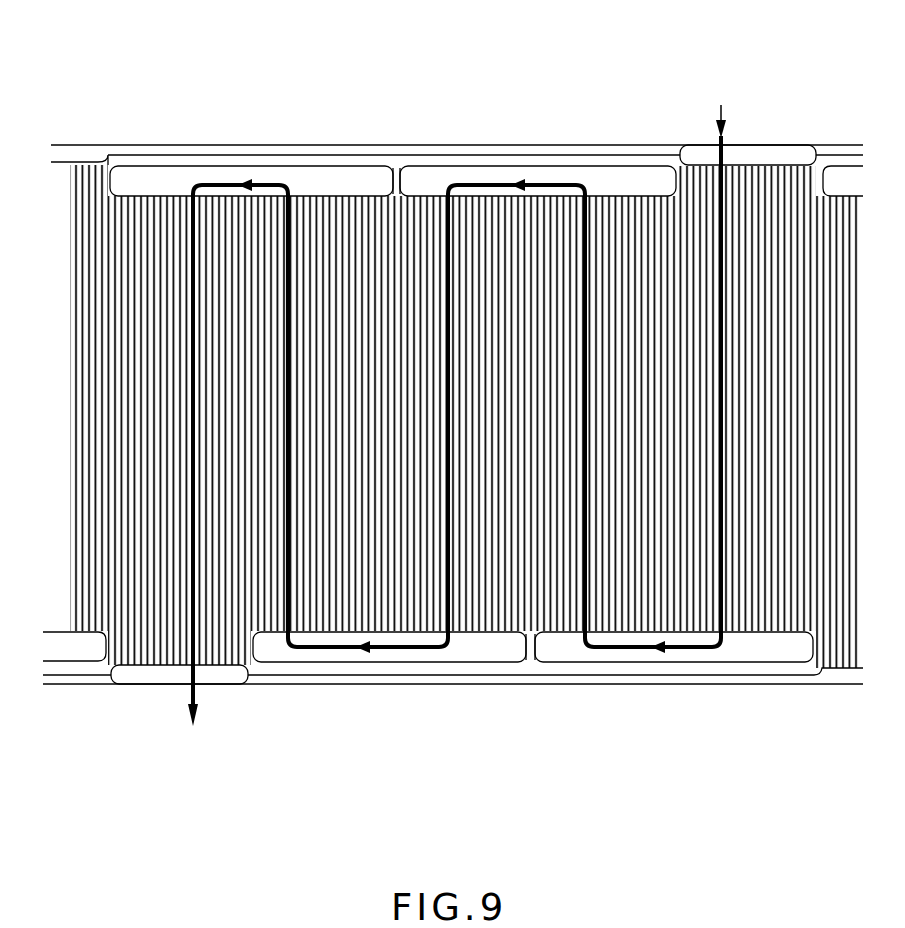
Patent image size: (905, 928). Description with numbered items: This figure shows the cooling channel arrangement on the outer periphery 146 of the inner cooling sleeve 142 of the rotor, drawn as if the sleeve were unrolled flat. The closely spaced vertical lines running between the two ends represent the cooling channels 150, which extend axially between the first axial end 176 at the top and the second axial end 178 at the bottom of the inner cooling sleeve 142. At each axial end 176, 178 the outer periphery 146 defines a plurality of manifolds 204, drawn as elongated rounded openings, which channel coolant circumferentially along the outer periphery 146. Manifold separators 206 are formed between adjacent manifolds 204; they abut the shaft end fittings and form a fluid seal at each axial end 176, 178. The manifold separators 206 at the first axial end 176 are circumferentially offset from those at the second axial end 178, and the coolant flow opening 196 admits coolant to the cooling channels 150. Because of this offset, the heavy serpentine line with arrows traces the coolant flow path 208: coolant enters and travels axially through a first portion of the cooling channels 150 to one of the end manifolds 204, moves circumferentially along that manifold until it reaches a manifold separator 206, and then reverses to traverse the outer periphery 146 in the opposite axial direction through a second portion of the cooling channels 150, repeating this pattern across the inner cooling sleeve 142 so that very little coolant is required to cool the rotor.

The inner cooling sleeve 142 is at (155, 106).
The outer periphery 146 is at (58, 577).
The cooling channels 150 is at (785, 212).
The first axial end 176 is at (620, 135).
The second axial end 178 is at (808, 678).
The coolant flow opening 196 is at (133, 668).
The manifolds 204 is at (305, 172).
The manifold separators 206 is at (388, 180).
The coolant flow path 208 is at (710, 130).